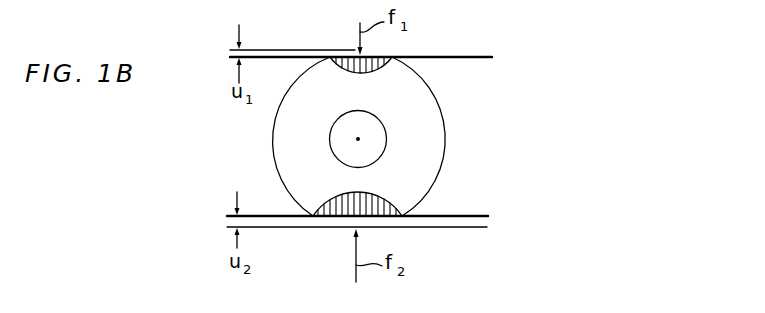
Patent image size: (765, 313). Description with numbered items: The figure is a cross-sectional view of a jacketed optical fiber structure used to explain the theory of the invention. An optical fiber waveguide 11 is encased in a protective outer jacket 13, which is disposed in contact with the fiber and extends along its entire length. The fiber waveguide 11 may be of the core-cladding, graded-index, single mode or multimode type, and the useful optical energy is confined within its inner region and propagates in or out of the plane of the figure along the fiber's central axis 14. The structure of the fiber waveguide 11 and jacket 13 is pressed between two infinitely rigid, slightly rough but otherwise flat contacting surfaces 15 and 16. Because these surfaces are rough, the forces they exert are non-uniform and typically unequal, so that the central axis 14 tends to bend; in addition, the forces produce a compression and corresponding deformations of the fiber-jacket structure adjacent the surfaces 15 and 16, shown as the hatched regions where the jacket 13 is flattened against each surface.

The optical fiber waveguide 11 is at (384, 128).
The protective outer jacket 13 is at (421, 183).
The central axis 14 is at (358, 139).
The contacting surface 15 is at (478, 56).
The contacting surface 16 is at (478, 230).